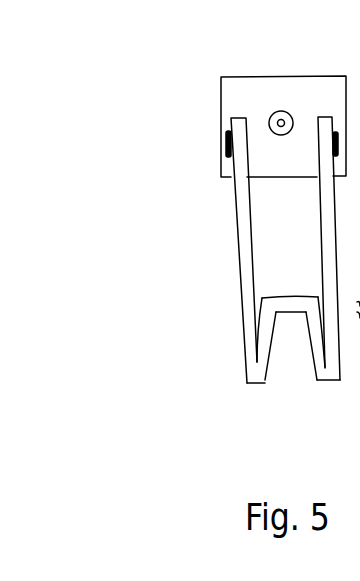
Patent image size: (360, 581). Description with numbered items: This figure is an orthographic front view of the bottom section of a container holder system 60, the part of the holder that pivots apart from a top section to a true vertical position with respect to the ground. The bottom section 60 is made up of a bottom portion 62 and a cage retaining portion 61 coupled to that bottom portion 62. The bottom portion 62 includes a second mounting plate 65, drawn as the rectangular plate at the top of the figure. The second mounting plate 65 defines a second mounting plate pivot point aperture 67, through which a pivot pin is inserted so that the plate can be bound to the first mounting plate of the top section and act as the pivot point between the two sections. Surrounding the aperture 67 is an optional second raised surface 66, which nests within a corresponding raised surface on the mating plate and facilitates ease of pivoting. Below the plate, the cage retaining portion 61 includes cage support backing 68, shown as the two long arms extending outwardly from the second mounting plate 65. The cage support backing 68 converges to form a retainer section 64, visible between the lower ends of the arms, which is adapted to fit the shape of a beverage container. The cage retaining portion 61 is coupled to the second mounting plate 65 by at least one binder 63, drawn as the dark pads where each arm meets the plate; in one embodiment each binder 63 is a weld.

The bottom section of a container holder system 60 is at (72, 178).
The cage retaining portion 61 is at (216, 257).
The bottom portion 62 is at (201, 133).
The binder 63 is at (248, 143).
The retainer section 64 is at (292, 284).
The second mounting plate 65 is at (238, 82).
The second raised surface 66 is at (278, 114).
The second mounting plate pivot point aperture 67 is at (285, 121).
The cage support backing 68 is at (240, 359).